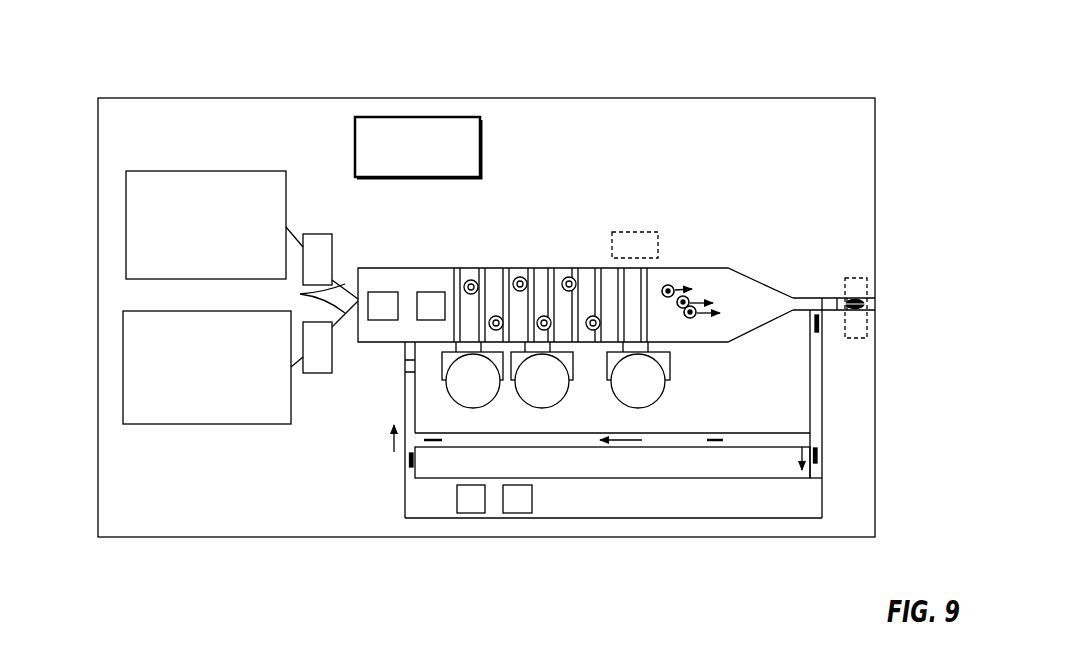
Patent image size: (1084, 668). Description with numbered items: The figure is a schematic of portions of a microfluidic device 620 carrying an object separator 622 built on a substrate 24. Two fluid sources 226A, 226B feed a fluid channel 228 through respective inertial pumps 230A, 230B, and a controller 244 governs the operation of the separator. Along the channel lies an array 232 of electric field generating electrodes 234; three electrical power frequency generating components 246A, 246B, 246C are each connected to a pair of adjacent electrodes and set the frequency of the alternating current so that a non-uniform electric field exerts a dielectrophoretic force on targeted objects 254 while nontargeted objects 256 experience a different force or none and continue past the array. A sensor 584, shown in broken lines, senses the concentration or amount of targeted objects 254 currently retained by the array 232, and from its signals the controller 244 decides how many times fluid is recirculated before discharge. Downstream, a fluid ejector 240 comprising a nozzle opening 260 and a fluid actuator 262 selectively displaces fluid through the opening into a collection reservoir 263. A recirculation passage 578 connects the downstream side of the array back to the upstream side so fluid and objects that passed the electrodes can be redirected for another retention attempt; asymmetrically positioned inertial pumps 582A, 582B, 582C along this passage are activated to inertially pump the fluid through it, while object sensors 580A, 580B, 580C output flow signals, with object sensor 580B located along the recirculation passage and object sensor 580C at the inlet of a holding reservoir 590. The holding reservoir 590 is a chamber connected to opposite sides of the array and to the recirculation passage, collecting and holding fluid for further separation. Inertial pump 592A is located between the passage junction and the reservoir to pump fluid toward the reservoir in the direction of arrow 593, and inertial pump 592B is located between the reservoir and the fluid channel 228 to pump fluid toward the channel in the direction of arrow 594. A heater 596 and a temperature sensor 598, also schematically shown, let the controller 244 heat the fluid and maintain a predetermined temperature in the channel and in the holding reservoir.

The substrate 24 is at (811, 97).
The microfluidic device 620 is at (114, 72).
The object separator 622 is at (780, 57).
The fluid source 226A is at (233, 171).
The fluid source 226B is at (178, 424).
The inertial pump 230A is at (318, 234).
The inertial pump 230B is at (318, 373).
The fluid channel 228 is at (300, 292).
The controller 244 is at (480, 145).
The heater 596 is at (432, 292).
The temperature sensor 598 is at (380, 320).
The electric field generating electrodes 234 is at (503, 268).
The targeted objects 254 is at (574, 278).
The array 232 is at (556, 261).
The sensor 584 is at (648, 232).
The nontargeted objects 256 is at (668, 284).
The electrical power frequency generating component 246A is at (486, 405).
The electrical power frequency generating component 246B is at (556, 405).
The electrical power frequency generating component 246C is at (662, 400).
The object sensor 580A is at (830, 297).
The object sensor 580B is at (403, 366).
The object sensor 580C is at (823, 482).
The fluid ejector 240 is at (861, 294).
The fluid actuator 262 is at (869, 302).
The nozzle opening 260 is at (858, 315).
The collection reservoir 263 is at (840, 318).
The inertial pump 582A is at (822, 330).
The inertial pump 582B is at (714, 440).
The inertial pump 582C is at (432, 440).
The inertial pump 592A is at (823, 456).
The inertial pump 592B is at (406, 463).
The arrow 593 is at (800, 458).
The arrow 594 is at (392, 455).
The recirculation passage 578 is at (552, 447).
The holding reservoir 590 is at (625, 520).